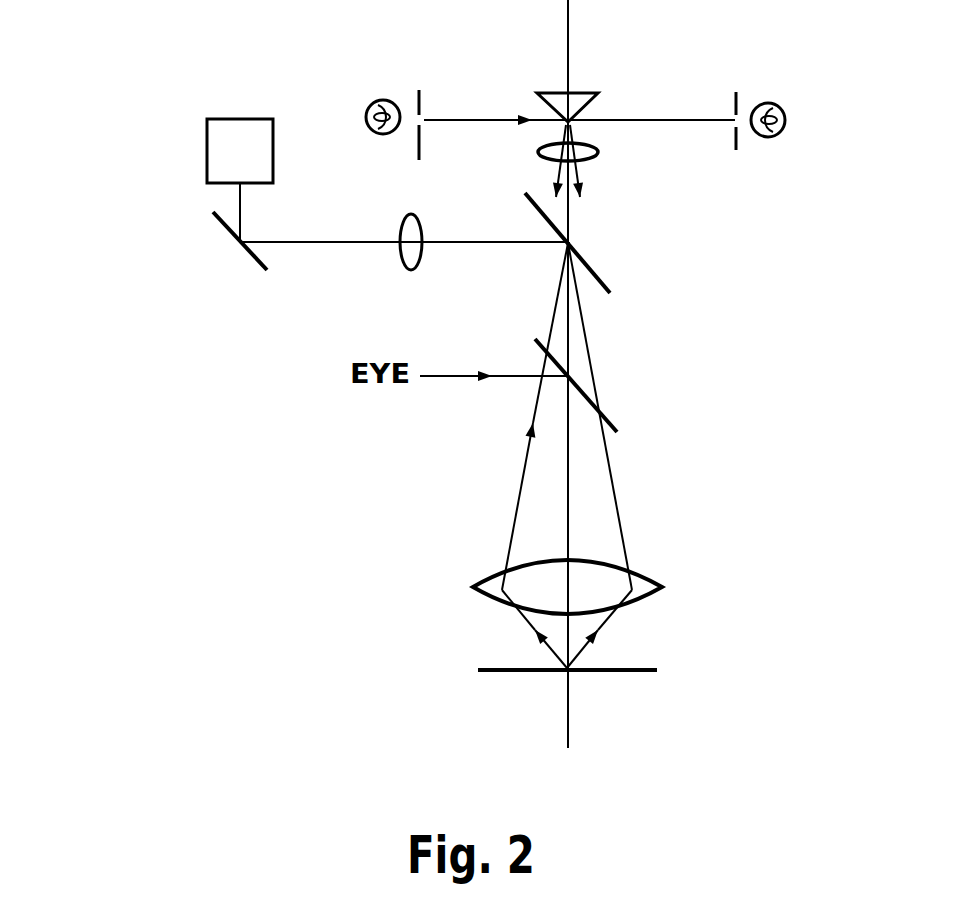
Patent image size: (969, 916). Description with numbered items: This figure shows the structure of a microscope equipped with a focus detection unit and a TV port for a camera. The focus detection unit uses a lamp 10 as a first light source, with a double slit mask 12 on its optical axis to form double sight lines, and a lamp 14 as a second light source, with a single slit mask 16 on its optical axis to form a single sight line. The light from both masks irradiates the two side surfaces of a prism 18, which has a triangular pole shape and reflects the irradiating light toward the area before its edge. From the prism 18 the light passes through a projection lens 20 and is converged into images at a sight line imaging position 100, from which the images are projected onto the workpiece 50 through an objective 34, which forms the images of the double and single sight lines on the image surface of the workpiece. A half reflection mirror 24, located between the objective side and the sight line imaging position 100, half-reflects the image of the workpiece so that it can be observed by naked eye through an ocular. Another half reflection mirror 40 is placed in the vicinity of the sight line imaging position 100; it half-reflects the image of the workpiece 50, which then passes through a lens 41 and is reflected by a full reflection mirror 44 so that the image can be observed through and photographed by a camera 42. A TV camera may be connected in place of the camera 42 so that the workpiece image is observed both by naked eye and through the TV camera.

The lamp 10 is at (386, 100).
The double slit mask 12 is at (421, 98).
The lamp 14 is at (785, 120).
The single slit mask 16 is at (738, 100).
The prism 18 is at (577, 92).
The projection lens 20 is at (598, 150).
The half reflection mirror 24 is at (545, 350).
The objective 34 is at (662, 581).
The half reflection mirror 40 is at (609, 291).
The lens 41 is at (400, 257).
The camera 42 is at (240, 118).
The full reflection mirror 44 is at (215, 213).
The workpiece 50 is at (640, 672).
The sight line imaging position 100 is at (570, 242).